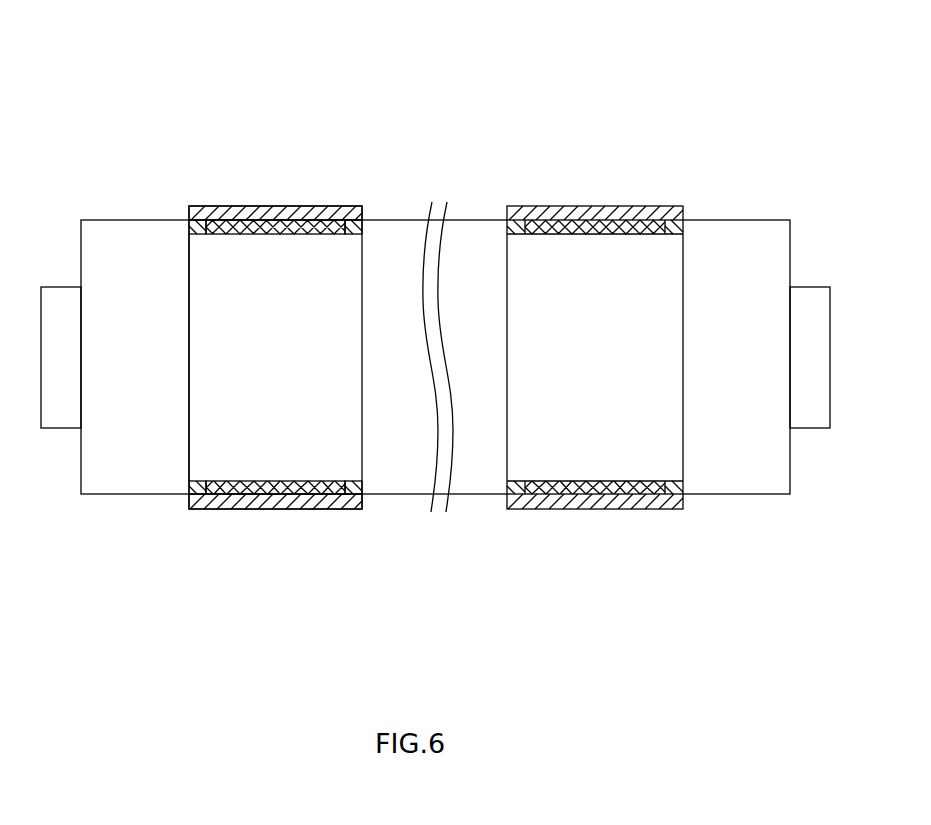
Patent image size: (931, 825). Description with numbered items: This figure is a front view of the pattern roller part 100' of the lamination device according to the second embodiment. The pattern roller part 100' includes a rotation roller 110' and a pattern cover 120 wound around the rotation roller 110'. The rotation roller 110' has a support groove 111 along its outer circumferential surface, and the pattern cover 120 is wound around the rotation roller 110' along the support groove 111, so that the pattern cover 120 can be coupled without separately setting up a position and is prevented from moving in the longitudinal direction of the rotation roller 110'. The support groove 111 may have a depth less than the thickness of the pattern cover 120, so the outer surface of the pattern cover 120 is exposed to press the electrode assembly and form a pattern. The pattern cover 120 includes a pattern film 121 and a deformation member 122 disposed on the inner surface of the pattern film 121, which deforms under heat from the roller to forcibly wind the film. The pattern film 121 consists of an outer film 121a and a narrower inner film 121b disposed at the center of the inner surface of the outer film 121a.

The pattern roller part 100' is at (435, 284).
The rotation roller 110' is at (435, 351).
The support groove 111 is at (188, 420).
The pattern cover 120 is at (278, 63).
The pattern film 121 is at (330, 116).
The outer film 121a is at (250, 212).
The inner film 121b is at (306, 224).
The deformation member 122 is at (197, 206).